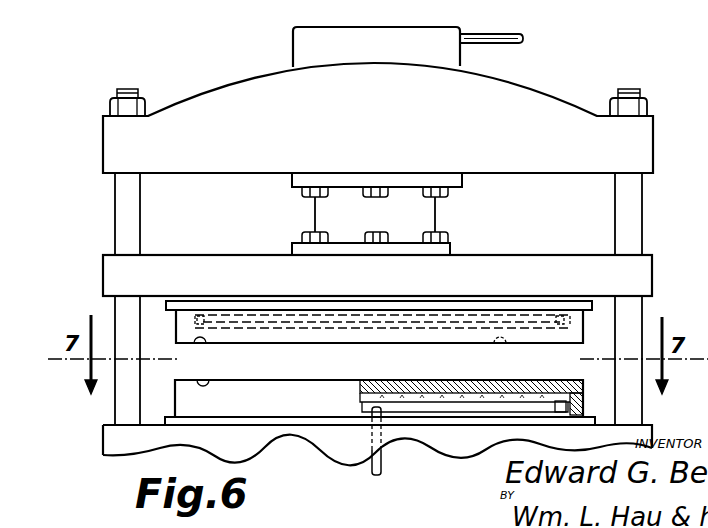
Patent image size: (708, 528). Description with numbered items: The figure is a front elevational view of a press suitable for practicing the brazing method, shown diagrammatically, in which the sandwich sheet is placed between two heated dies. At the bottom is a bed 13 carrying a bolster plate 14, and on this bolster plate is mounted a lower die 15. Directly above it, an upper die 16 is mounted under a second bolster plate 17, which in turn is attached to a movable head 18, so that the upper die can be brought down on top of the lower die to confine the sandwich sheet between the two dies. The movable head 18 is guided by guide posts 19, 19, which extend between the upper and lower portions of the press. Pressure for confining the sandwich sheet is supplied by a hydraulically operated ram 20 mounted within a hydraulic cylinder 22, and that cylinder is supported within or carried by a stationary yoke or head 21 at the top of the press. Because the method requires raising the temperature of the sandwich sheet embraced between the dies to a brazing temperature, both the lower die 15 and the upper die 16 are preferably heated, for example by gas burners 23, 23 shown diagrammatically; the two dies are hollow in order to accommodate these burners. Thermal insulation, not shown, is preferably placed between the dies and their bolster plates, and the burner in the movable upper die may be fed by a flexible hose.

The bed 13 is at (117, 443).
The bolster plate 14 is at (317, 421).
The lower die 15 is at (297, 379).
The upper die 16 is at (441, 342).
The bolster plate 17 is at (232, 303).
The movable head 18 is at (630, 272).
The guide posts 19 is at (127, 218).
The ram 20 is at (428, 219).
The stationary yoke or head 21 is at (537, 100).
The cylinder 22 is at (398, 36).
The gas burners 23 is at (358, 343).